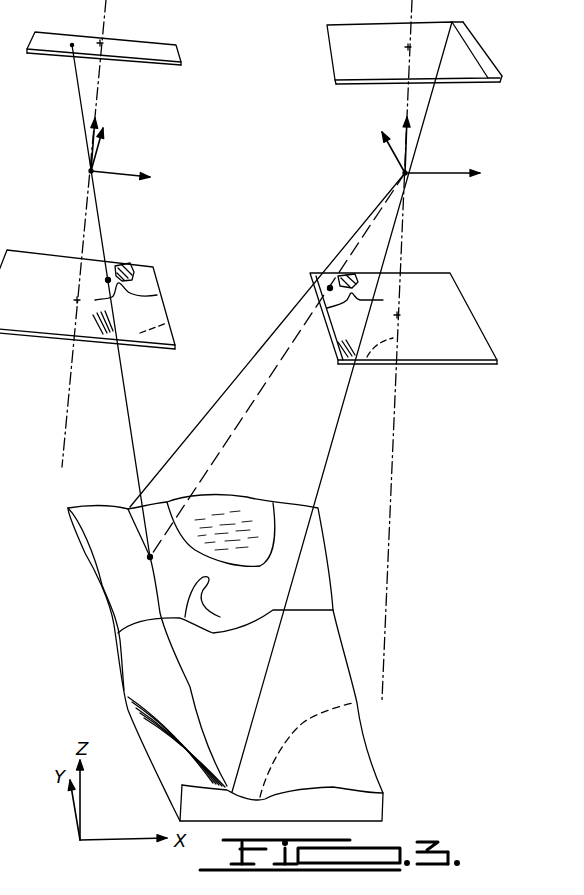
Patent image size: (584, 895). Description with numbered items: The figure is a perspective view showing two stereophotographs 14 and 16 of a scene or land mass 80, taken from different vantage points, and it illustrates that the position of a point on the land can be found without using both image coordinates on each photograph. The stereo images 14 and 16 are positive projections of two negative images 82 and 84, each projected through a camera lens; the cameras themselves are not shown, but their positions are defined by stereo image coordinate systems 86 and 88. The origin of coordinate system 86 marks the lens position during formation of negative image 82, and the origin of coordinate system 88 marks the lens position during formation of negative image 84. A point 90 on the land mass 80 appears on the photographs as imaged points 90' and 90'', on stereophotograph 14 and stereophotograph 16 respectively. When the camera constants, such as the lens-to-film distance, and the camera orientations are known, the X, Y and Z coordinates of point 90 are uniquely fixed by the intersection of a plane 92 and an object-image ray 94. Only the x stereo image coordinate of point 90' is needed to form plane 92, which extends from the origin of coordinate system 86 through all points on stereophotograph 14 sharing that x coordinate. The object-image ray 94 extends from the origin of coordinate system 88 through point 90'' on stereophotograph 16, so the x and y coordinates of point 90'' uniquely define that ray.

The stereophotograph 14 is at (440, 306).
The stereophotograph 16 is at (35, 288).
The land mass 80 is at (320, 673).
The negative image 82 is at (378, 55).
The negative image 84 is at (152, 50).
The stereo image coordinate system 86 is at (410, 177).
The stereo image coordinate system 88 is at (90, 171).
The point on land mass 90 is at (104, 587).
The imaged point 90' is at (320, 253).
The imaged point 90'' is at (140, 249).
The plane 92 is at (323, 478).
The object-image ray 94 is at (135, 443).